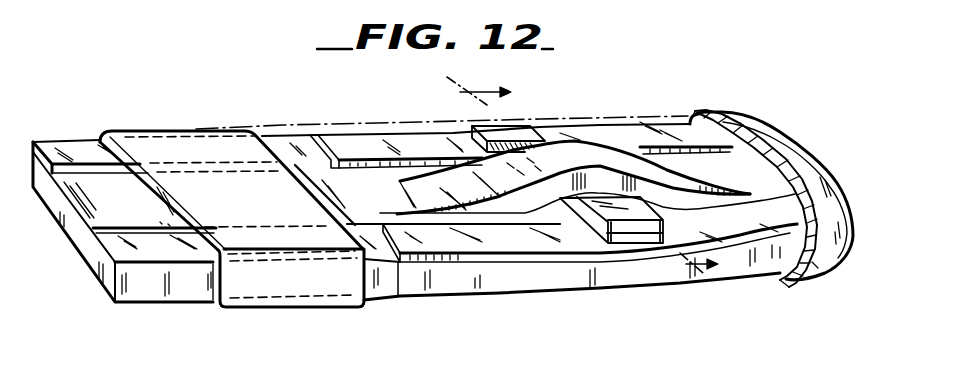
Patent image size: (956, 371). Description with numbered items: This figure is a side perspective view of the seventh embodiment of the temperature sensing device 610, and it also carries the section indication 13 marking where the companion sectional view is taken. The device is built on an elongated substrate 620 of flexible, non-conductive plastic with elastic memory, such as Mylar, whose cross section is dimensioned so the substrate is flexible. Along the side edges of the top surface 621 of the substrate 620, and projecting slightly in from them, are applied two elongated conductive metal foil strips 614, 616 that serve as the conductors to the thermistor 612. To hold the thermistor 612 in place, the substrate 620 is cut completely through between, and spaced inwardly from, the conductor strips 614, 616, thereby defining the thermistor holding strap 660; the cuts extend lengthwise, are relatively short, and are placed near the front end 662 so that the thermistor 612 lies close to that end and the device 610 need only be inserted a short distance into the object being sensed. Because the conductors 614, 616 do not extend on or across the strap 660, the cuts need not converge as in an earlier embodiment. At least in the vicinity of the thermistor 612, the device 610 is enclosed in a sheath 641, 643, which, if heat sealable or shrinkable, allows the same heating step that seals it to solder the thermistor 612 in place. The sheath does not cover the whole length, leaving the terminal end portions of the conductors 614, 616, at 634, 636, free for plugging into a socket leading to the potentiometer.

The temperature sensing device 610 is at (692, 81).
The thermistor 612 is at (508, 138).
The conductive metal foil strip 614 is at (373, 141).
The conductive metal foil strip 616 is at (470, 241).
The elongated substrate 620 is at (567, 273).
The top surface 621 is at (132, 216).
The terminal end portion of conductor 634 is at (75, 141).
The terminal end portion of conductor 636 is at (163, 245).
The sheath 641 is at (260, 310).
The sheath 643 is at (222, 111).
The thermistor holding strap 660 is at (463, 190).
The front end 662 is at (837, 188).
The section line 13- 13 is at (599, 177).